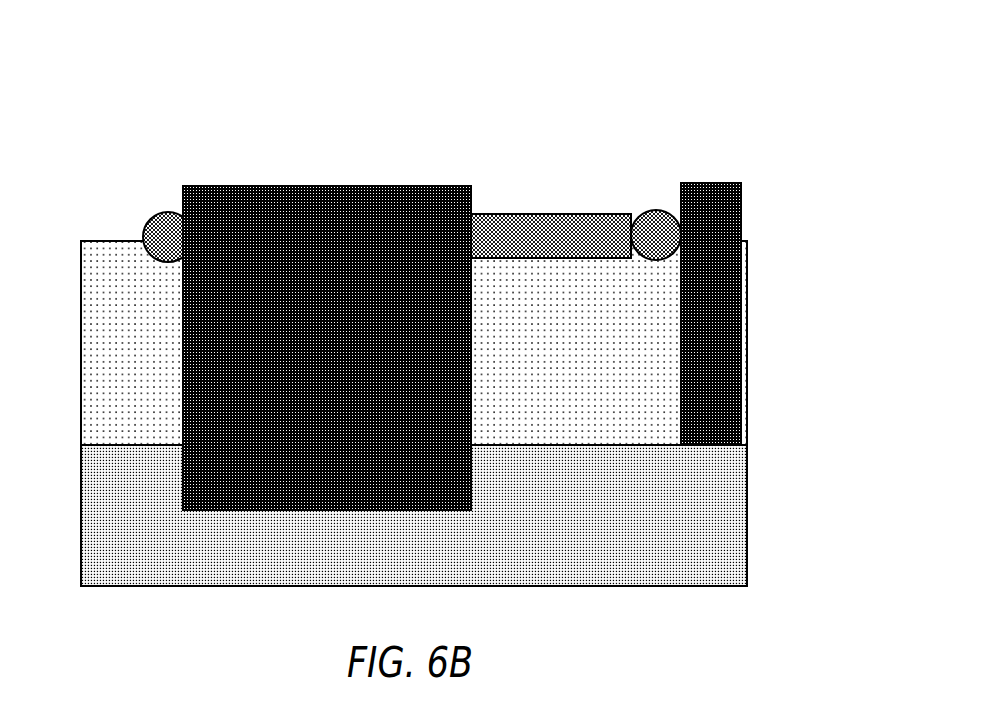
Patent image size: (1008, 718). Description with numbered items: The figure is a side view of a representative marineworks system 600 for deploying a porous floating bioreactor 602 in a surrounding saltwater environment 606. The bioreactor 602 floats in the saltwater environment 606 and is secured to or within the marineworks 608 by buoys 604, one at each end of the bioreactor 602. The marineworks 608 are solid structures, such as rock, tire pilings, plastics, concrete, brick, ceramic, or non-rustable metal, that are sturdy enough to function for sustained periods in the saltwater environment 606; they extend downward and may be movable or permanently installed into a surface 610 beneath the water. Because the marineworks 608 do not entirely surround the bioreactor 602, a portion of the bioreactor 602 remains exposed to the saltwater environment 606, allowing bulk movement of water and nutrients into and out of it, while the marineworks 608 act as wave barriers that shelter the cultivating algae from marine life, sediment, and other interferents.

The marineworks system 600 is at (673, 58).
The porous floating bioreactor 602 is at (516, 232).
The buoy 604 is at (167, 233).
The saltwater environment 606 is at (588, 354).
The marineworks 608 is at (346, 358).
The surface 610 is at (588, 526).